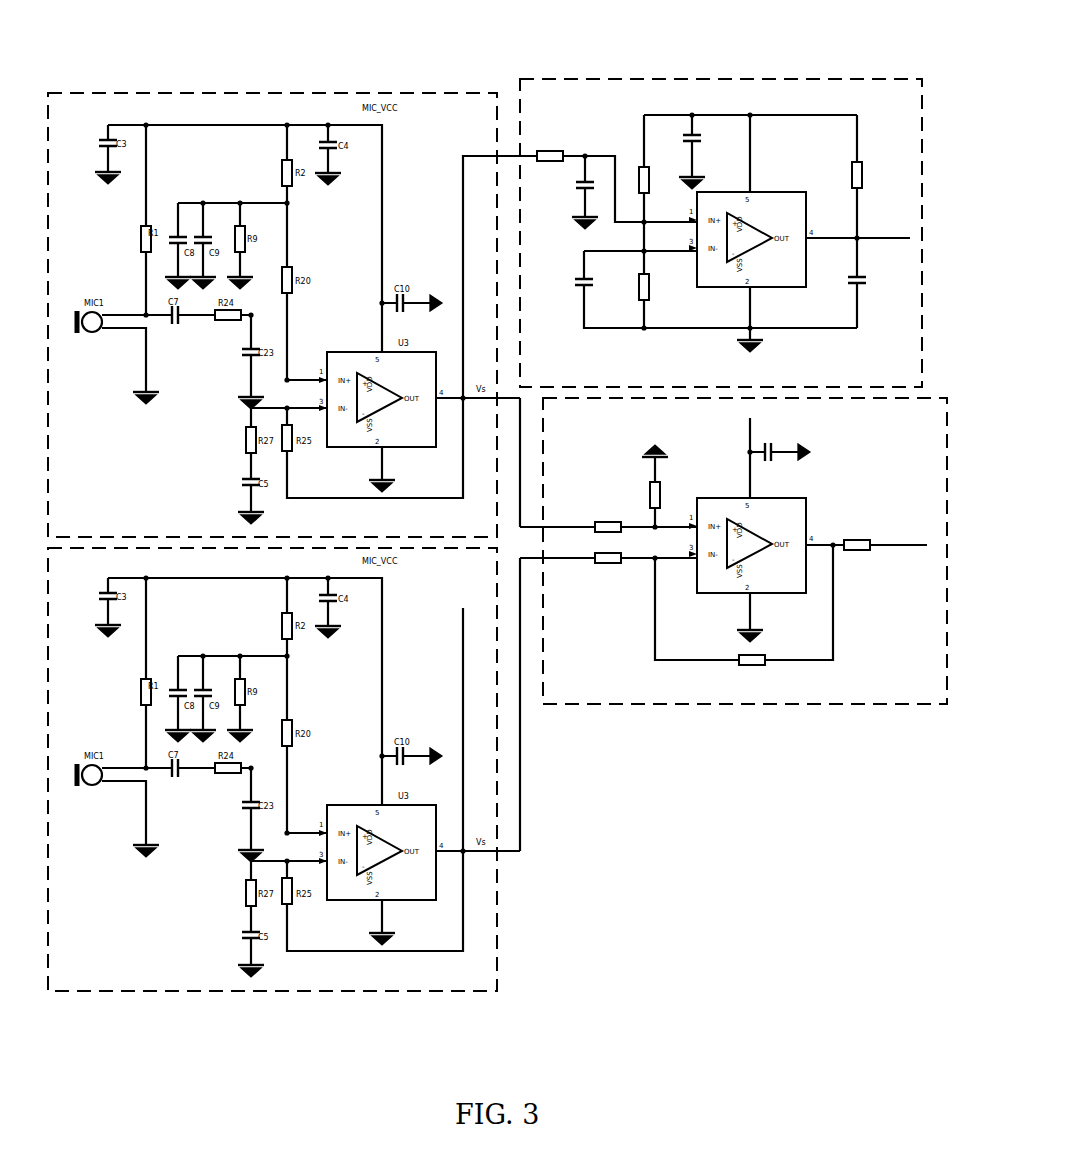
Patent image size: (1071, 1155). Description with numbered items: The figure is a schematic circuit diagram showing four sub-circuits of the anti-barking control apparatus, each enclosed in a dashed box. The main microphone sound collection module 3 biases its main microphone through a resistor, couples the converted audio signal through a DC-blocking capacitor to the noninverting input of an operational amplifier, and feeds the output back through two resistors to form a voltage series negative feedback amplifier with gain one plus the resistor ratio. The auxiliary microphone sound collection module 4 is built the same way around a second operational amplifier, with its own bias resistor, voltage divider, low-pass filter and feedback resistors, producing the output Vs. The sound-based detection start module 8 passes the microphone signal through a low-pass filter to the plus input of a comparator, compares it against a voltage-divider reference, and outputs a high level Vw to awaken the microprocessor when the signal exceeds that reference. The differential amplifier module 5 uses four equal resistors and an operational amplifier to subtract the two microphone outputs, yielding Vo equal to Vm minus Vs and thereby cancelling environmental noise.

The main microphone sound collection module 3 is at (150, 95).
The auxiliary microphone sound collection module 4 is at (382, 992).
The differential amplifier module 5 is at (767, 707).
The sound-based detection start module 8 is at (673, 80).